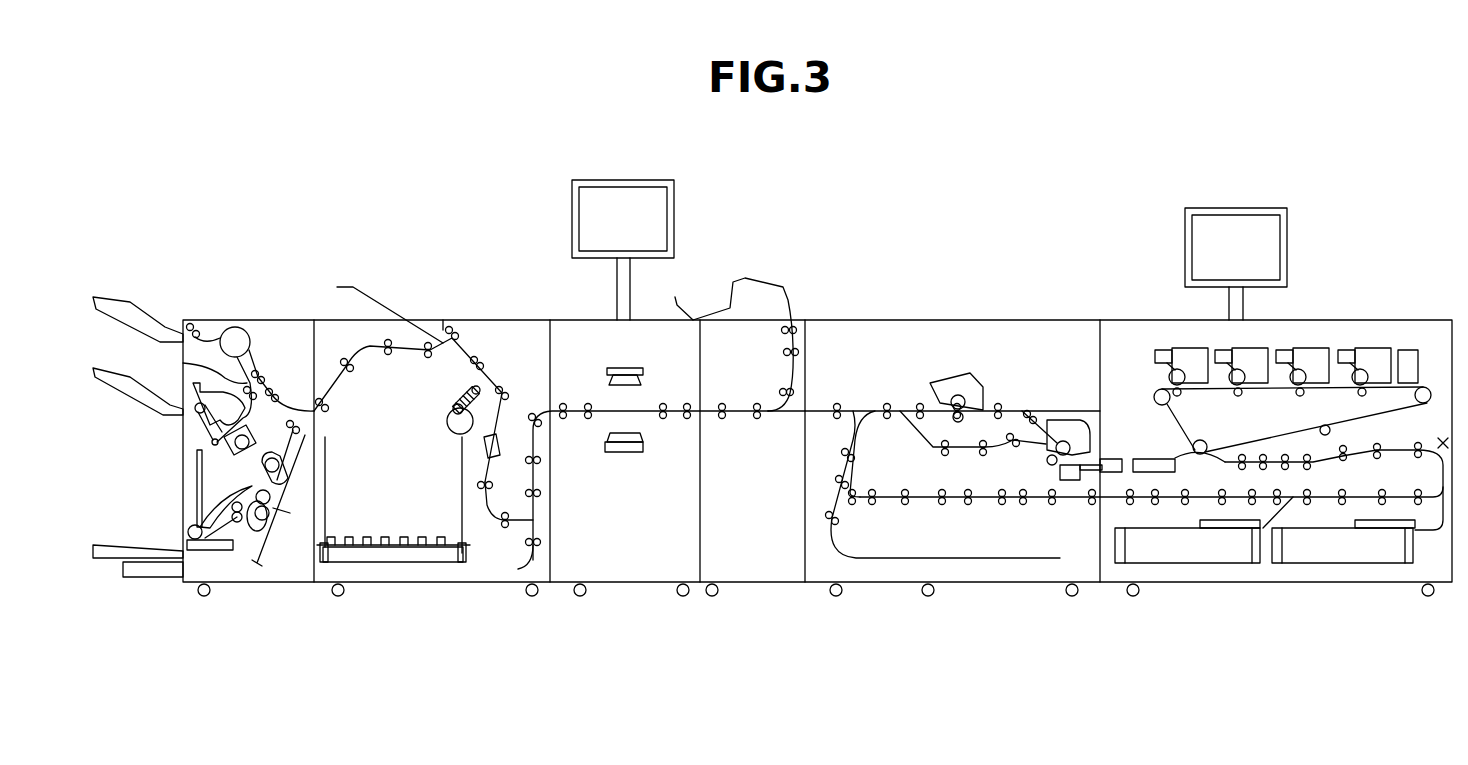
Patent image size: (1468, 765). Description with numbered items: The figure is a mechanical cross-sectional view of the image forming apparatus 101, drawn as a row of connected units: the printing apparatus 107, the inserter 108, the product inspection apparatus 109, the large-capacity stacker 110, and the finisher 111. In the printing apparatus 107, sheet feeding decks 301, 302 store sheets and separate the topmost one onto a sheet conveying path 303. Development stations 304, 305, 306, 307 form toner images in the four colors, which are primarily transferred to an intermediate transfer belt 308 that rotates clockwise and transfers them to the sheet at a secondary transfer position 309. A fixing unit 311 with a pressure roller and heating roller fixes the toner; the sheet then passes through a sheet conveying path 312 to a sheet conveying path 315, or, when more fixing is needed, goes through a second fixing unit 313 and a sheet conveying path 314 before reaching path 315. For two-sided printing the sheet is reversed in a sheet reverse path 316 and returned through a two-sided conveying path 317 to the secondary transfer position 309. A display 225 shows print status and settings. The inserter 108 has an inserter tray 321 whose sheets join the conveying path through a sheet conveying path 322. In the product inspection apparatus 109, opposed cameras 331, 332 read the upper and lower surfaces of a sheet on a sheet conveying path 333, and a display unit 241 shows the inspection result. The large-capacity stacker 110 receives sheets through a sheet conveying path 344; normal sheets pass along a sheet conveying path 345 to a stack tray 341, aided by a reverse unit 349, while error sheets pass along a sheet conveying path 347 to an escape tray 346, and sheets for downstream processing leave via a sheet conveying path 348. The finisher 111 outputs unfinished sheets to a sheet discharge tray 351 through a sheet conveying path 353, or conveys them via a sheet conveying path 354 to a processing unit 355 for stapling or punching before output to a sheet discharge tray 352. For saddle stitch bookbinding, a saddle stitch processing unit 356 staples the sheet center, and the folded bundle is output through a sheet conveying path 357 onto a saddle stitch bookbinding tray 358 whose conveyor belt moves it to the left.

The image forming apparatus 101 is at (1455, 646).
The printing apparatus 107 is at (957, 582).
The inserter 108 is at (755, 582).
The product inspection apparatus 109 is at (627, 582).
The large-capacity stacker 110 is at (452, 582).
The finisher 111 is at (279, 582).
The display unit 241 is at (622, 196).
The display 225 is at (1235, 230).
The sheet feeding deck 301 is at (1190, 563).
The sheet feeding deck 302 is at (1340, 563).
The sheet conveying path 303 is at (1387, 447).
The development station 304 is at (1377, 347).
The development station 305 is at (1317, 347).
The development station 306 is at (1258, 345).
The development station 307 is at (1188, 347).
The intermediate transfer belt 308 is at (1245, 442).
The secondary transfer position 309 is at (1192, 450).
The fixing unit 311 is at (1063, 420).
The sheet conveying path 312 is at (910, 424).
The second fixing unit 313 is at (950, 377).
The sheet conveying path 314 is at (903, 410).
The sheet conveying path 315 is at (818, 410).
The sheet reverse path 316 is at (900, 558).
The two-sided conveying path 317 is at (1062, 502).
The inserter tray 321 is at (712, 304).
The sheet conveying path 322 is at (788, 378).
The camera 331 is at (619, 366).
The camera 332 is at (622, 452).
The sheet conveying path 333 is at (600, 407).
The stack tray 341 is at (393, 529).
The sheet conveying path 344 is at (482, 505).
The sheet conveying path 345 is at (482, 385).
The escape tray 346 is at (382, 306).
The sheet conveying path 347 is at (472, 338).
The sheet conveying path 348 is at (411, 371).
The reverse unit 349 is at (522, 557).
The sheet discharge tray 351 is at (123, 303).
The sheet discharge tray 352 is at (113, 368).
The sheet conveying path 353 is at (205, 332).
The sheet conveying path 354 is at (190, 368).
The processing unit 355 is at (213, 443).
The saddle stitch processing unit 356 is at (280, 515).
The sheet conveying path 357 is at (207, 549).
The saddle stitch bookbinding tray 358 is at (127, 548).